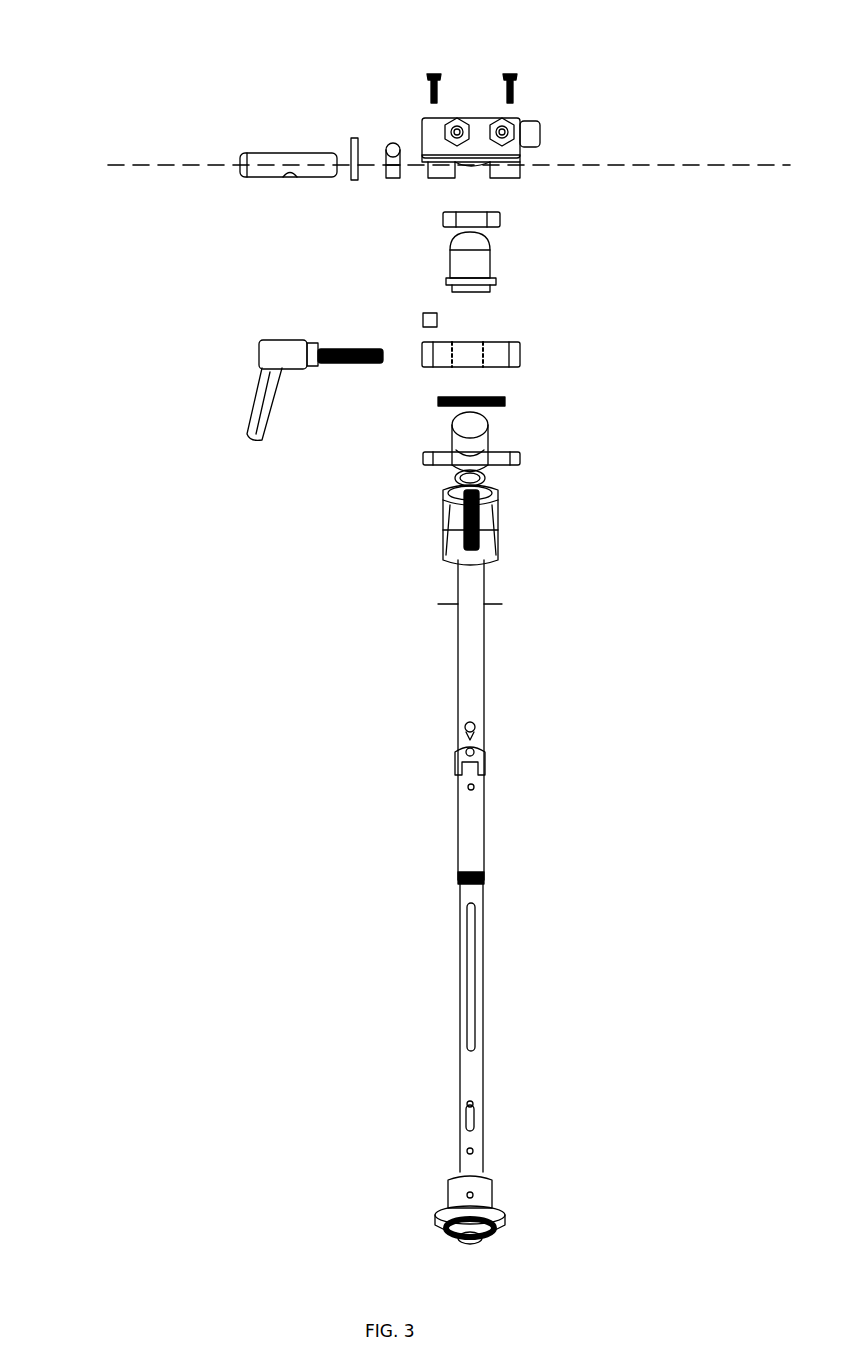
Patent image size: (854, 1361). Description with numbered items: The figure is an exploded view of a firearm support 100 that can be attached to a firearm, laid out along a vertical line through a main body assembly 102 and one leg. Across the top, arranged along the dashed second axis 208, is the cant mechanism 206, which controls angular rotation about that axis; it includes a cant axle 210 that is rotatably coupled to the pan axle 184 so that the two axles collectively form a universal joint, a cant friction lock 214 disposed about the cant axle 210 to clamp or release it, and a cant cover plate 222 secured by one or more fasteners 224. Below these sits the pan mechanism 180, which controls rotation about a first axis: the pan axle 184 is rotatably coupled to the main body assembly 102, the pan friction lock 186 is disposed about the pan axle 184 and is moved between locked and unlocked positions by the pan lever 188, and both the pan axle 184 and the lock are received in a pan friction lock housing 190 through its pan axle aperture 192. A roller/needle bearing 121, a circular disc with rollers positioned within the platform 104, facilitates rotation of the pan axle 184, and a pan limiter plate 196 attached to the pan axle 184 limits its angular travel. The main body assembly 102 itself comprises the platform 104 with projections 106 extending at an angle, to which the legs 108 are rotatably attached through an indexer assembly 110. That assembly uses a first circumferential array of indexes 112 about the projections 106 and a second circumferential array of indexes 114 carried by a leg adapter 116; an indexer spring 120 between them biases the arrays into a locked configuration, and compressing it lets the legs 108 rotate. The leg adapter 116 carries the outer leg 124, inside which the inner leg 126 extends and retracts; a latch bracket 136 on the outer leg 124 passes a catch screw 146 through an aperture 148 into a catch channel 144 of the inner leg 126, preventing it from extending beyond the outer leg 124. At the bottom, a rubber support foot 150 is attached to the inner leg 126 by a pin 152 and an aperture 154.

The firearm support 100 is at (622, 40).
The main body assembly 102 is at (530, 420).
The platform 104 is at (424, 460).
The projections 106 is at (447, 497).
The legs 108 is at (428, 754).
The indexer assembly 110 is at (372, 500).
The first circumferential array of indexes 112 is at (498, 500).
The second circumferential array of indexes 114 is at (485, 545).
The leg adapter 116 is at (452, 428).
The indexer spring 120 is at (487, 478).
The roller/needle bearing 121 is at (440, 400).
The outer leg 124 is at (459, 697).
The inner leg 126 is at (485, 1075).
The latch bracket 136 is at (482, 762).
The catch channel 144 is at (472, 975).
The catch screw 146 is at (478, 726).
The aperture 148 is at (475, 786).
The support foot 150 is at (492, 1195).
The pin 152 is at (465, 1115).
The aperture 154 is at (466, 1150).
The pan mechanism 180 is at (362, 268).
The pan axle 184 is at (488, 256).
The pan friction lock 186 is at (498, 216).
The pan lever 188 is at (256, 396).
The pan friction lock housing 190 is at (512, 350).
The pan axle aperture 192 is at (462, 332).
The pan limiter plate 196 is at (500, 600).
The cant mechanism 206 is at (288, 110).
The second axis 208 is at (632, 166).
The cant axle 210 is at (270, 150).
The cant friction lock 214 is at (392, 140).
The cant cover plate 222 is at (353, 138).
The fasteners 224 is at (422, 316).